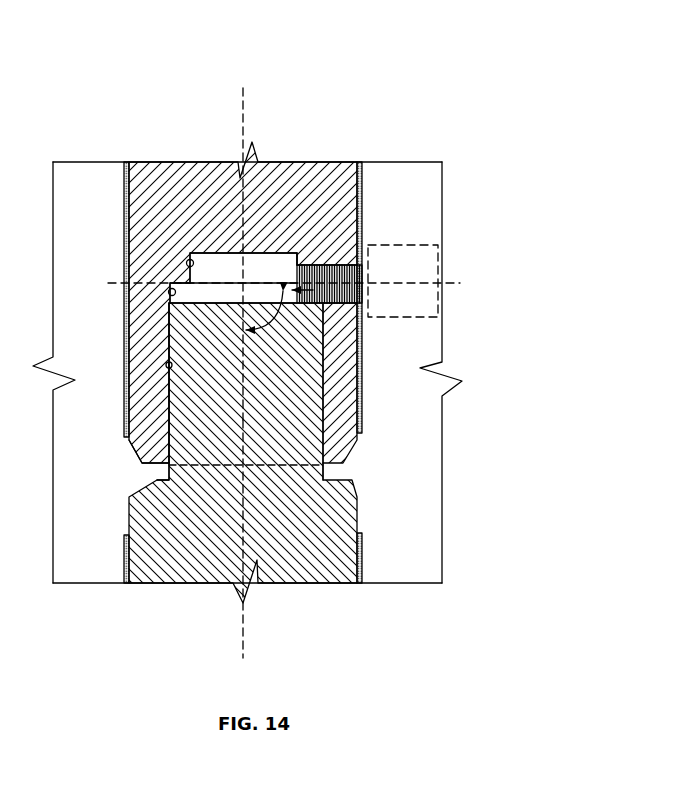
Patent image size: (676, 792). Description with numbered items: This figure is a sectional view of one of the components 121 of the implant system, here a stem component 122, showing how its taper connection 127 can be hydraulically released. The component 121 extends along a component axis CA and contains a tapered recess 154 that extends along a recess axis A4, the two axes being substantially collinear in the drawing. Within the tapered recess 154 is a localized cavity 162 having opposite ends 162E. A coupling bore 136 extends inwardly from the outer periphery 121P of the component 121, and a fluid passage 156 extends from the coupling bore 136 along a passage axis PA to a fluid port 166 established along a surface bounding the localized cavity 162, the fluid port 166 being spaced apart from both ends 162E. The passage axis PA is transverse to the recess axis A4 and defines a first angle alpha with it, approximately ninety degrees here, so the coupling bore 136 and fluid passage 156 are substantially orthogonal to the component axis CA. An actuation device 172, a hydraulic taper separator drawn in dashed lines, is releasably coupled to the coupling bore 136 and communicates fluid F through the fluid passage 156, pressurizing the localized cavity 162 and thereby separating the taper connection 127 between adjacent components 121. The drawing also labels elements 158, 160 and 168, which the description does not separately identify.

The component 121 is at (73, 379).
The stem component 122 is at (123, 178).
The outer periphery 121P is at (363, 178).
The fluid passage 156 is at (343, 257).
The core body 158 is at (337, 178).
The coupling bore 136 is at (363, 247).
The fluid port 166 is at (297, 257).
The recess corner 168 is at (187, 263).
The localized cavity 162 is at (169, 292).
The ends of the localized cavity 162E is at (237, 255).
The tapered recess 154 is at (166, 365).
The taper connection 127 is at (158, 382).
The neck 160 is at (173, 432).
The actuation device 172 is at (438, 245).
The passage axis PA is at (457, 283).
The component axis CA is at (244, 93).
The recess axis A4 is at (245, 628).
The fluid F is at (318, 300).
The first angle alpha is at (296, 312).